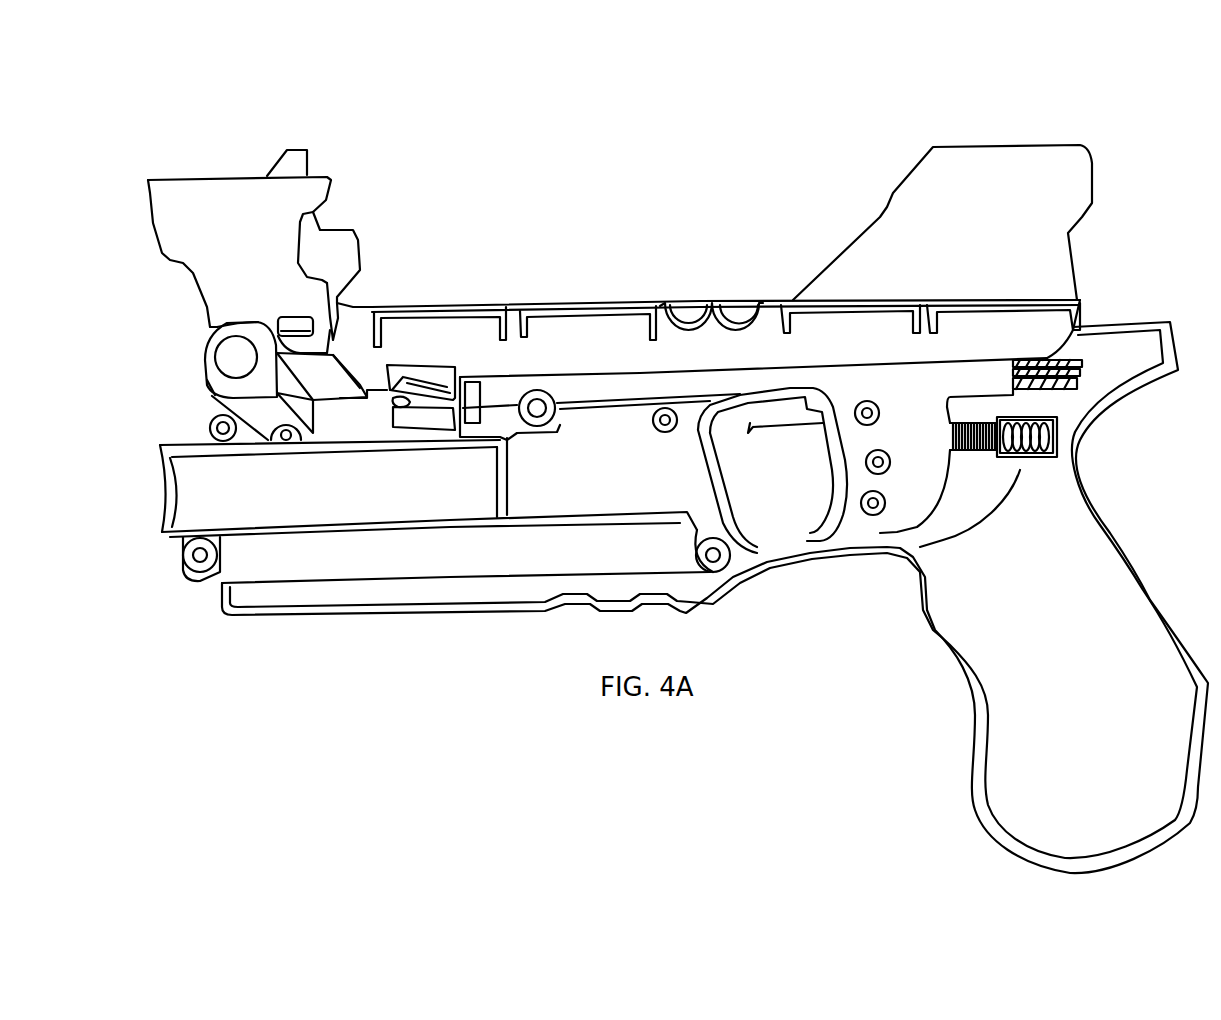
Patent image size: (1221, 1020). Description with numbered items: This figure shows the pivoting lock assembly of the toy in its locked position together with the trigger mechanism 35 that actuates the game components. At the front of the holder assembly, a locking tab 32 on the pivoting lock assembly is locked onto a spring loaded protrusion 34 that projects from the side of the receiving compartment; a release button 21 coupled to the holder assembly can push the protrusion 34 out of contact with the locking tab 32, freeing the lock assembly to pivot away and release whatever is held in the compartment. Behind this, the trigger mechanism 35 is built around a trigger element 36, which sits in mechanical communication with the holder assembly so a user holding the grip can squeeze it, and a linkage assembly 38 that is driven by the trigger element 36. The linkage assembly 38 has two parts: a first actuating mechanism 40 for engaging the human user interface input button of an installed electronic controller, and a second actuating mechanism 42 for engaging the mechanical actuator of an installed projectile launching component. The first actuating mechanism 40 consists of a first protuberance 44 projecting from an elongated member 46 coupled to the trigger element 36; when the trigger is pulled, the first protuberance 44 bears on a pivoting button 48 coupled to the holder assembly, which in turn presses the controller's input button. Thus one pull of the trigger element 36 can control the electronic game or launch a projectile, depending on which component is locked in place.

The release button 21 is at (223, 357).
The locking tab 32 is at (316, 305).
The spring loaded protrusion 34 is at (297, 318).
The trigger mechanism 35 is at (703, 410).
The trigger element 36 is at (902, 505).
The linkage assembly 38 is at (702, 353).
The first actuating mechanism 40 is at (383, 413).
The second actuating mechanism 42 is at (1023, 397).
The first protuberance 44 is at (407, 403).
The elongated member 46 is at (595, 383).
The pivoting button 48 is at (438, 375).